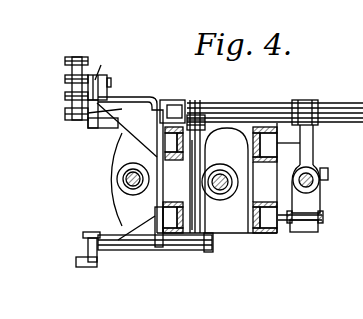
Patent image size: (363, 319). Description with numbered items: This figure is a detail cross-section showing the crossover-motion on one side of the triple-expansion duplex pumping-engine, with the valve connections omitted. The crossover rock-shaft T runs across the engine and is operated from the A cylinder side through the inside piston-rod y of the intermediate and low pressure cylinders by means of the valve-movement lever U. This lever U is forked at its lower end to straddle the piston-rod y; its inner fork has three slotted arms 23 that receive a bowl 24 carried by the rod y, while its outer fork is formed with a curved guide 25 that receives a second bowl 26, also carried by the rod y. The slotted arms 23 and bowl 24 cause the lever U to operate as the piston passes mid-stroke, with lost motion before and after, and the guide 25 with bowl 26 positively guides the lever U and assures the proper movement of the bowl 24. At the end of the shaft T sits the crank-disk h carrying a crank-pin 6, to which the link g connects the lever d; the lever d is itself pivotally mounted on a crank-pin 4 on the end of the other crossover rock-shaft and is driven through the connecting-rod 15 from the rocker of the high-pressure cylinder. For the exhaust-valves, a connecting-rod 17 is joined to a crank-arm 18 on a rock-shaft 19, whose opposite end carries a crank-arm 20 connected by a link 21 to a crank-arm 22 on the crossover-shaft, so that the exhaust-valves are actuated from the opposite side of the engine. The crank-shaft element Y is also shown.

The connecting-rod 15 is at (82, 57).
The link g is at (65, 88).
The crank-pin 4 is at (66, 112).
The crank-pin 6 is at (108, 79).
The lever d is at (103, 63).
The crank-disk h is at (110, 115).
The inside piston-rod y is at (117, 177).
The second bowl 26 is at (278, 192).
The crank shaft Y is at (220, 176).
The crank-arm 22 is at (196, 113).
The link 21 is at (201, 218).
The crank-arm 20 is at (209, 246).
The crossover rock-shaft T is at (275, 104).
The valve-movement lever U is at (300, 143).
The bowl 24 is at (328, 176).
The slotted arms 23 is at (323, 219).
The curved guide 25 is at (291, 232).
The crank-arm 18 is at (97, 252).
The rock-shaft 19 is at (84, 235).
The connecting-rod 17 is at (82, 267).